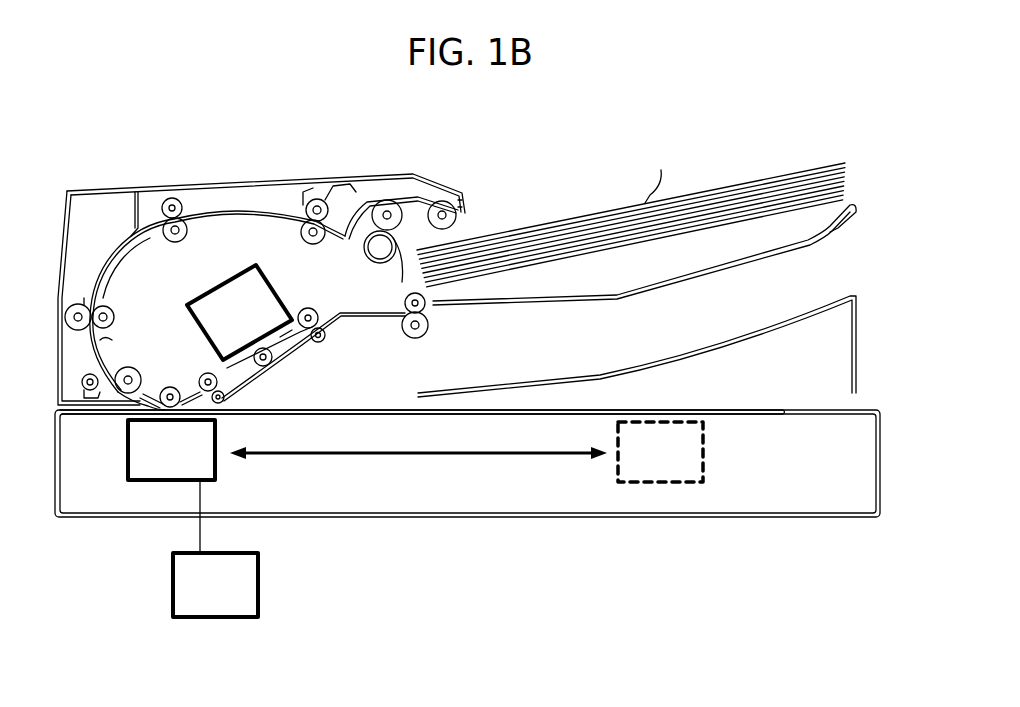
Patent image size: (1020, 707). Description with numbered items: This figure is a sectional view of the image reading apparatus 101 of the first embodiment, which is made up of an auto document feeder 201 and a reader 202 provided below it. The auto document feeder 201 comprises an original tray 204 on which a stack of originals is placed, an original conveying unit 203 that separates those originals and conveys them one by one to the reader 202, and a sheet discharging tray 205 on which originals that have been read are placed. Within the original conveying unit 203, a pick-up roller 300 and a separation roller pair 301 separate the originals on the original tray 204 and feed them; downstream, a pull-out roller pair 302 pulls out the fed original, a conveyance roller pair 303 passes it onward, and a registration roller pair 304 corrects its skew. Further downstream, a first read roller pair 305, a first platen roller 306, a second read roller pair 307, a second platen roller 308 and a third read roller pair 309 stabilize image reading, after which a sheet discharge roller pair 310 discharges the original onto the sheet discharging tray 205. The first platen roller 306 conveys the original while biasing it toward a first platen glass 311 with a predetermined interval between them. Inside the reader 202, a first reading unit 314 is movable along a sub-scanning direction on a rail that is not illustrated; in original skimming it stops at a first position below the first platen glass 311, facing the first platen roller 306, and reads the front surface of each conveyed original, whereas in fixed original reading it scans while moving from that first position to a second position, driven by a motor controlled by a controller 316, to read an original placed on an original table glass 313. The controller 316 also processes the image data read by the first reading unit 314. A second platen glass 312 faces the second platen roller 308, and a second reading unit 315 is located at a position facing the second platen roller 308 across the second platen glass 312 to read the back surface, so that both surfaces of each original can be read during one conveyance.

The image reading apparatus 101 is at (605, 142).
The auto document feeder 201 is at (237, 214).
The reader 202 is at (787, 520).
The original conveying unit 203 is at (110, 222).
The original tray 204 is at (827, 215).
The sheet discharging tray 205 is at (778, 315).
The pick-up roller 300 is at (441, 200).
The separation roller pair 301 is at (372, 262).
The pull-out roller pair 302 is at (315, 198).
The conveyance roller pair 303 is at (172, 199).
The registration roller pair 304 is at (75, 307).
The first read roller pair 305 is at (127, 365).
The first platen roller 306 is at (173, 388).
The second read roller pair 307 is at (237, 397).
The second platen roller 308 is at (274, 367).
The third read roller pair 309 is at (308, 306).
The sheet discharge roller pair 310 is at (407, 338).
The first platen glass 311 is at (152, 416).
The second platen glass 312 is at (286, 343).
The original table glass 313 is at (720, 408).
The first reading unit 314 is at (128, 470).
The second reading unit 315 is at (238, 272).
The controller 316 is at (173, 593).